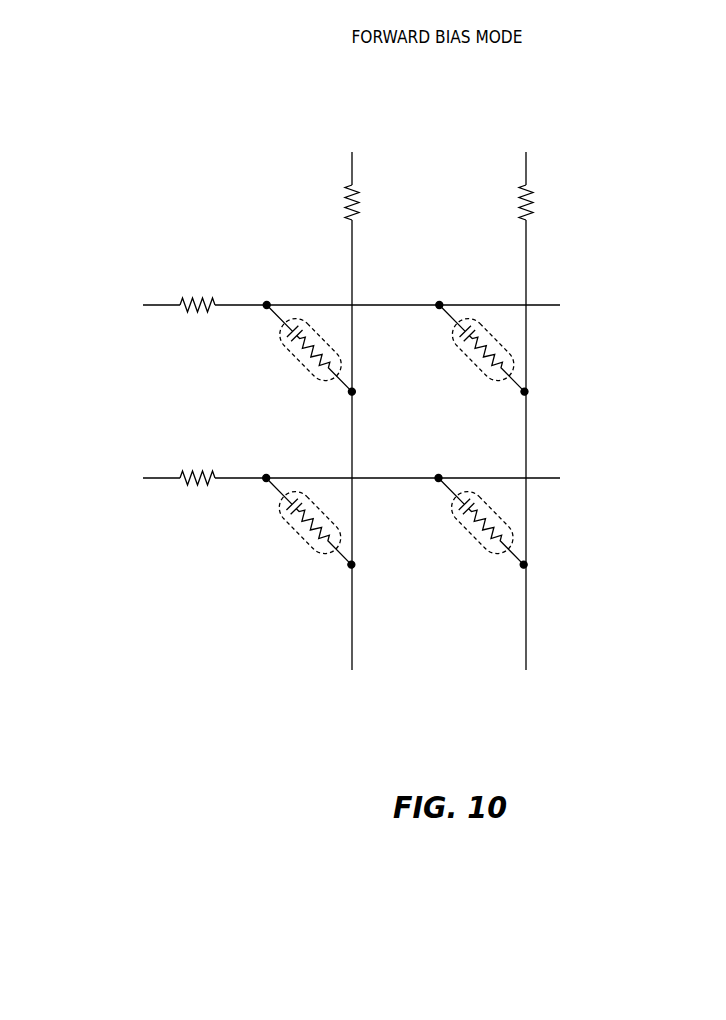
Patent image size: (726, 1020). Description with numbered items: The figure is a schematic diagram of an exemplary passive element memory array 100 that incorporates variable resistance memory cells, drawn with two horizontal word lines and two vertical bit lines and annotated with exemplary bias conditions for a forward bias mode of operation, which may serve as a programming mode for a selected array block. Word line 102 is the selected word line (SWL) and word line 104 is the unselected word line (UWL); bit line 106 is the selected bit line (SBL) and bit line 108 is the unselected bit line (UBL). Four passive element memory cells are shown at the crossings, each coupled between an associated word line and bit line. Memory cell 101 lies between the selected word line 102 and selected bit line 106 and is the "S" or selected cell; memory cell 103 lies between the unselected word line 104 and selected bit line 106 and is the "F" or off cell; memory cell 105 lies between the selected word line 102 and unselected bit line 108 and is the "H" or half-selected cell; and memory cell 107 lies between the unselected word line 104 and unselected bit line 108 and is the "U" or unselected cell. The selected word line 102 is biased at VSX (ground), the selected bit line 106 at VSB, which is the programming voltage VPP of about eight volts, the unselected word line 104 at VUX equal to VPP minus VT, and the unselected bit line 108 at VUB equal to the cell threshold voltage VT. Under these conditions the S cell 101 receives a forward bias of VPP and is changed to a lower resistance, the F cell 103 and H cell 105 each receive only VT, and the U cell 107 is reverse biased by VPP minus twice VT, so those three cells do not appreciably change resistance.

The passive element memory array 100 is at (149, 140).
The memory cell 101 is at (282, 348).
The word line 102 is at (385, 304).
The memory cell 103 is at (282, 520).
The word line 104 is at (385, 477).
The memory cell 105 is at (455, 346).
The bit line 106 is at (352, 617).
The memory cell 107 is at (455, 519).
The bit line 108 is at (526, 617).